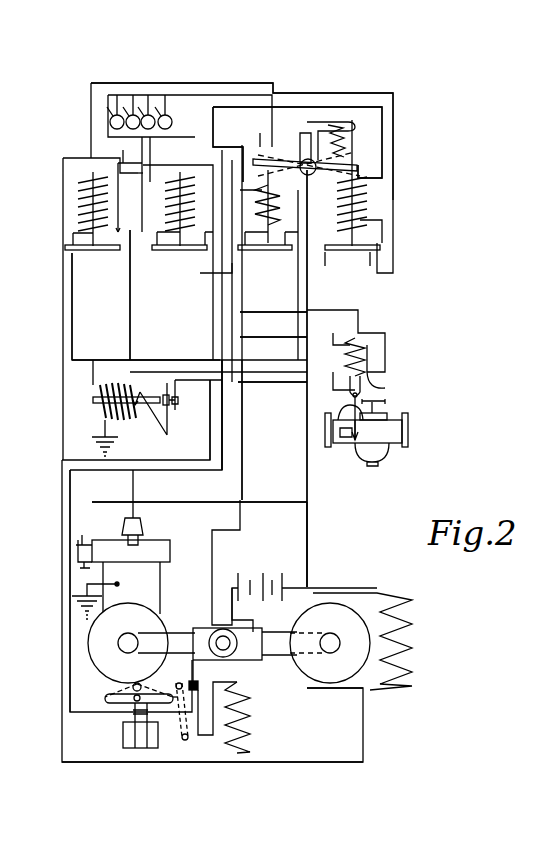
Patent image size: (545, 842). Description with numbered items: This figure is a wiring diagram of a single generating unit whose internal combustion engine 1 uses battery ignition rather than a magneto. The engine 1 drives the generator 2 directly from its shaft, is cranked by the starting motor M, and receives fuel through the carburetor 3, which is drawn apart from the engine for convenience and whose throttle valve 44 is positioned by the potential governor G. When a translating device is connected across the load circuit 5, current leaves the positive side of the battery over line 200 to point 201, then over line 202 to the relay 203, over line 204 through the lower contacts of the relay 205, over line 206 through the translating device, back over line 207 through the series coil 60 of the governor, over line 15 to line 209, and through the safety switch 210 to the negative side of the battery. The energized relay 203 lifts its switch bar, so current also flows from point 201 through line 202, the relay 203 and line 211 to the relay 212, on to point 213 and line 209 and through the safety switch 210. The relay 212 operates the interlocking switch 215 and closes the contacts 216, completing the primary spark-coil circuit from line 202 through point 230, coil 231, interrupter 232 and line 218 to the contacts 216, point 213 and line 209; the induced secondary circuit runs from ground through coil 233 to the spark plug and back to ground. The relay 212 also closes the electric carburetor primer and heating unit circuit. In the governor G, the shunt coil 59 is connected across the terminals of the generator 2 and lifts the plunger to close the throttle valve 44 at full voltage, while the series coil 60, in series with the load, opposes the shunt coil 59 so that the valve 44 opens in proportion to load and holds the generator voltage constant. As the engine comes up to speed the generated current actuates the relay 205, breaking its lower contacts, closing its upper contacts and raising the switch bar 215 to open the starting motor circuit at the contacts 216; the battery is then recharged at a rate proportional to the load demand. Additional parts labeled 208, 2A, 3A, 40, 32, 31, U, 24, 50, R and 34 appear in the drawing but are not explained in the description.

The line 206 is at (188, 96).
The line 204 is at (173, 157).
The line 211 is at (123, 150).
The line 207 is at (138, 173).
The relay 203 is at (78, 206).
The point 213 is at (233, 222).
The relay 212 is at (258, 195).
The interlocking switch 215 is at (358, 143).
The contacts 216 is at (345, 165).
The relay 205 is at (370, 192).
The conductors 208 is at (281, 307).
The point 201 is at (307, 358).
The series coil 60 is at (356, 340).
The shunt coil 59 is at (360, 346).
The potential governor G is at (385, 360).
The line 15 is at (385, 388).
The throttle valve 44 is at (345, 438).
The carburetor 3 is at (348, 441).
The line 202 is at (108, 358).
The point 230 is at (93, 364).
The coil 231 is at (93, 405).
The interrupter 232 is at (192, 401).
The coil 233 is at (105, 420).
The conductor 2A is at (222, 432).
The conductor 3A is at (178, 450).
The line 218 is at (255, 382).
The conductor 40 is at (307, 400).
The line 209 is at (243, 447).
The conductor 32 is at (192, 490).
The conductor 31 is at (307, 501).
The line 200 is at (310, 557).
The contact device U is at (76, 556).
The internal combustion engine 1 is at (103, 599).
The conductor 24 is at (70, 609).
The starting motor M is at (235, 662).
The generator 2 is at (347, 647).
The lever 50 is at (125, 705).
The resistance R is at (125, 742).
The safety switch 210 is at (181, 741).
The load circuit 5 is at (219, 706).
The conductor 34 is at (267, 763).